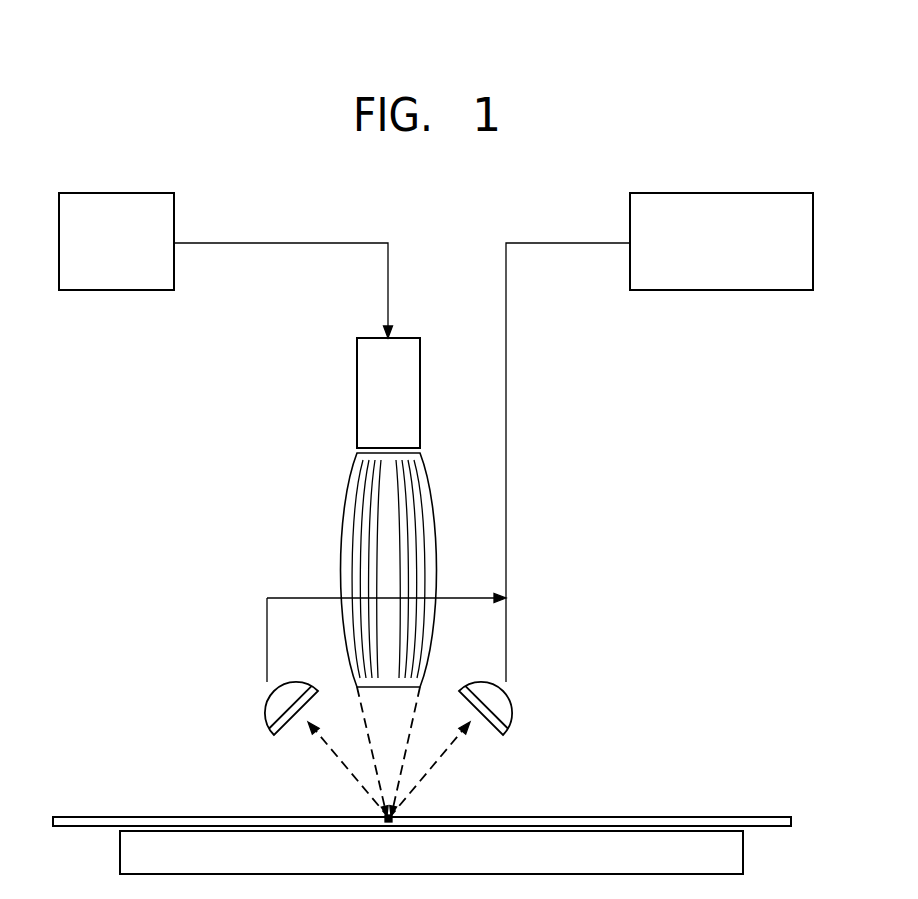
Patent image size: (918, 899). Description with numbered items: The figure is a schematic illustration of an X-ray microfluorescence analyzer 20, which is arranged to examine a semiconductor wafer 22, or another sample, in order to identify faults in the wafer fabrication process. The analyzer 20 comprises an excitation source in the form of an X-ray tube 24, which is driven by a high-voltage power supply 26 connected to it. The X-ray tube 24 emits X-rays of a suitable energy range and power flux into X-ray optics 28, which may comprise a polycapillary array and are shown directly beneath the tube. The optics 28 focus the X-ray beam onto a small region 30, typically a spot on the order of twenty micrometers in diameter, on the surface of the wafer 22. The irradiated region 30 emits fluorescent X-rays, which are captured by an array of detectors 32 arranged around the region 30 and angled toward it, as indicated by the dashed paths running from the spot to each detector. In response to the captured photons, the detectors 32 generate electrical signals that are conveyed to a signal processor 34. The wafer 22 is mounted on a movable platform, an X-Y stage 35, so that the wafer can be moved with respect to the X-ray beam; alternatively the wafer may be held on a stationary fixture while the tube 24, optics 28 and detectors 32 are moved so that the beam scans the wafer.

The X-ray microfluorescence analyzer 20 is at (138, 63).
The semiconductor wafer 22 is at (717, 817).
The X-ray tube 24 is at (356, 373).
The high-voltage power supply 26 is at (105, 193).
The X-ray optics 28 is at (347, 488).
The region 30 is at (387, 820).
The detectors 32 is at (264, 704).
The signal processor 34 is at (716, 193).
The X-Y stage 35 is at (738, 856).